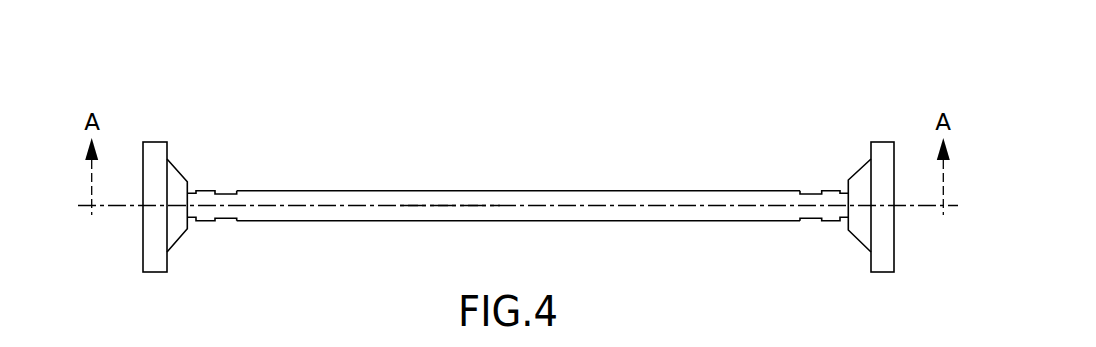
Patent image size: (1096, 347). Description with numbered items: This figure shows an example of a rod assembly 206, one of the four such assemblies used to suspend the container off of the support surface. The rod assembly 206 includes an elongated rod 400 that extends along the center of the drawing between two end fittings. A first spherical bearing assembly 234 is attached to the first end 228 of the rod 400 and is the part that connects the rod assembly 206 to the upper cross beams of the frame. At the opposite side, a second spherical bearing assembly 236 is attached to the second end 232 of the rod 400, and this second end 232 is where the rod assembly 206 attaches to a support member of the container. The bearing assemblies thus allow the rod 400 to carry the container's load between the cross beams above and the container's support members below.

The first spherical bearing assembly 234 is at (161, 117).
The second spherical bearing assembly 236 is at (909, 126).
The first end 228 is at (235, 157).
The second end 232 is at (811, 165).
The rod assembly 206 is at (683, 114).
The rod 400 is at (447, 208).